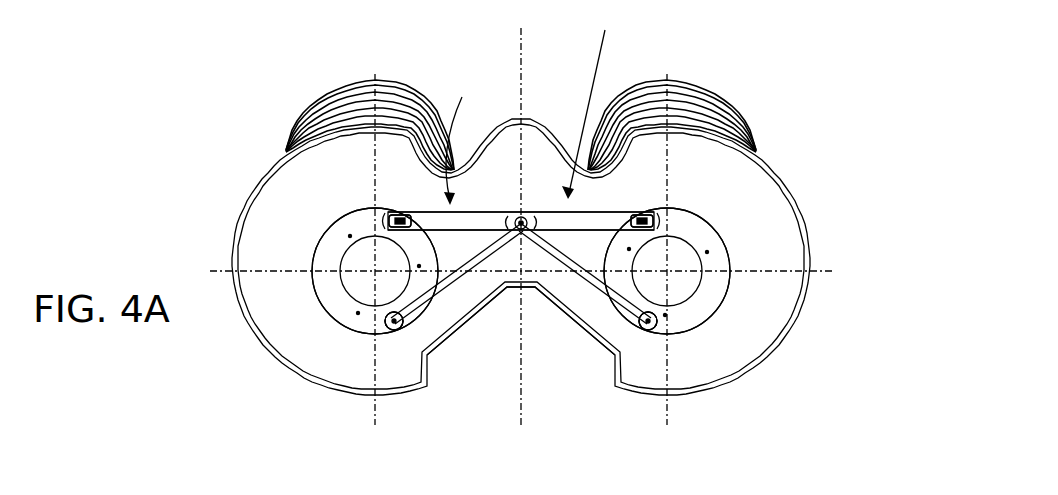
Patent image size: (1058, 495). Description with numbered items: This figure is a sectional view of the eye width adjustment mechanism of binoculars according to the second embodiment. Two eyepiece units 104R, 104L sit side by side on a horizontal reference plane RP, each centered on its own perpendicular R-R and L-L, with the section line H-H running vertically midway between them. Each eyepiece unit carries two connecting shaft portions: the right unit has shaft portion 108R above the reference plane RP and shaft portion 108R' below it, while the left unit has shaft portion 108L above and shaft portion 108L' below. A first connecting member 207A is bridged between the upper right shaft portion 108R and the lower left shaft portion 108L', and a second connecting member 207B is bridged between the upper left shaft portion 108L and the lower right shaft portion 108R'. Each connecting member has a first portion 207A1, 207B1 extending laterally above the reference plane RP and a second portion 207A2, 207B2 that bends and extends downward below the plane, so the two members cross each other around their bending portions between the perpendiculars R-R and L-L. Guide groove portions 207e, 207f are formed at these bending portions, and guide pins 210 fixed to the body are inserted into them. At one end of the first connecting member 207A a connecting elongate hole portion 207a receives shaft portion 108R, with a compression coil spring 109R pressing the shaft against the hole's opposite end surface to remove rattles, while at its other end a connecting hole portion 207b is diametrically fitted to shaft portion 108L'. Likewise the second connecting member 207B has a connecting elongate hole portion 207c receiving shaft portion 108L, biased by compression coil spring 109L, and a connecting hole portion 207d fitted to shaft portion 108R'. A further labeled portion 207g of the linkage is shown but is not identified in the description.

The eyepiece unit 104R is at (345, 90).
The eyepiece unit 104L is at (700, 100).
The connecting shaft portion 108R is at (295, 271).
The connecting shaft portion 108L is at (744, 271).
The connecting shaft portion 108R' is at (387, 392).
The connecting shaft portion 108L' is at (762, 353).
The compression coil spring 109R is at (392, 218).
The compression coil spring 109L is at (650, 215).
The first connecting member 207A is at (425, 100).
The first portion 207A1 is at (430, 222).
The second portion 207A2 is at (648, 330).
The second connecting member 207B is at (576, 172).
The first portion 207B1 is at (593, 221).
The second portion 207B2 is at (446, 278).
The connecting elongate hole portion 207a is at (400, 214).
The connecting hole portion 207b is at (657, 322).
The connecting elongate hole portion 207c is at (640, 210).
The connecting hole portion 207d is at (394, 330).
The guide groove portion 207e is at (463, 138).
The guide groove portion 207f is at (597, 105).
The lower connecting portion 207g is at (534, 292).
The guide pin 210 is at (530, 212).
The H-H section line H is at (518, 225).
The perpendicular R- R is at (374, 249).
The perpendicular L- L is at (665, 248).
The reference plane RP is at (537, 275).